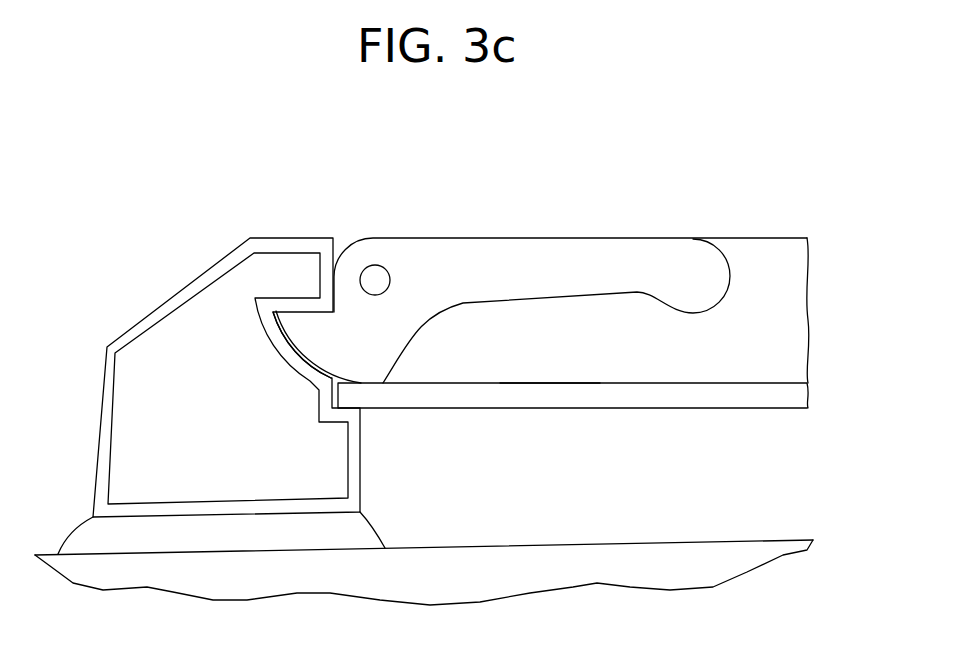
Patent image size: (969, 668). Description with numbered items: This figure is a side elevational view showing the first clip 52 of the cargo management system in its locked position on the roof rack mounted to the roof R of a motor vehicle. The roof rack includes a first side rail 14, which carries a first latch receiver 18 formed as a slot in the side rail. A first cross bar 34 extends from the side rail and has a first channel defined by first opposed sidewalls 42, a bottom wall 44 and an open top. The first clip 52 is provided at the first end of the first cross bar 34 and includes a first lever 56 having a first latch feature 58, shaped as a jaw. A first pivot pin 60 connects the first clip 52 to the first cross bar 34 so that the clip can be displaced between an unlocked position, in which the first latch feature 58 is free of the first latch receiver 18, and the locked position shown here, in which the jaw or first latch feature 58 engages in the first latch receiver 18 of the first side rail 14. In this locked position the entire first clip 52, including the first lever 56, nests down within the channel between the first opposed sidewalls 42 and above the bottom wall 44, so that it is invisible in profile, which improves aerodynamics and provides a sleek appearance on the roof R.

The first side rail 14 is at (180, 292).
The first latch receiver 18 is at (283, 313).
The first cross bar 34 is at (808, 368).
The first opposed sidewalls 42 is at (750, 323).
The bottom wall 44 is at (553, 383).
The first clip 52 is at (723, 222).
The first lever 56 is at (578, 263).
The first latch feature 58 is at (310, 323).
The first pivot pin 60 is at (378, 277).
The roof R is at (585, 542).